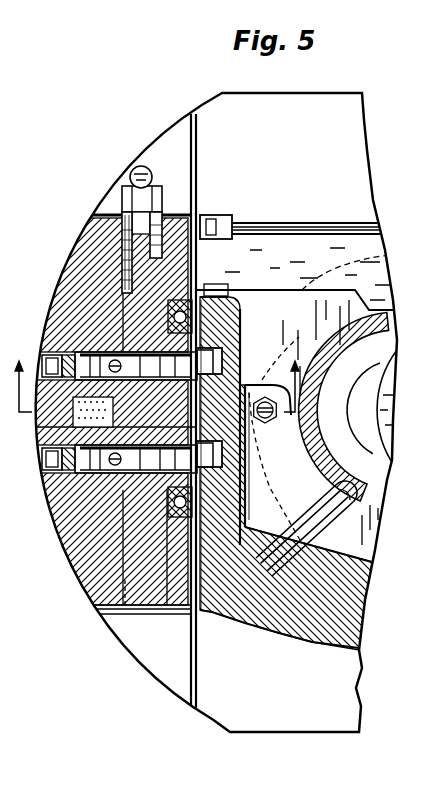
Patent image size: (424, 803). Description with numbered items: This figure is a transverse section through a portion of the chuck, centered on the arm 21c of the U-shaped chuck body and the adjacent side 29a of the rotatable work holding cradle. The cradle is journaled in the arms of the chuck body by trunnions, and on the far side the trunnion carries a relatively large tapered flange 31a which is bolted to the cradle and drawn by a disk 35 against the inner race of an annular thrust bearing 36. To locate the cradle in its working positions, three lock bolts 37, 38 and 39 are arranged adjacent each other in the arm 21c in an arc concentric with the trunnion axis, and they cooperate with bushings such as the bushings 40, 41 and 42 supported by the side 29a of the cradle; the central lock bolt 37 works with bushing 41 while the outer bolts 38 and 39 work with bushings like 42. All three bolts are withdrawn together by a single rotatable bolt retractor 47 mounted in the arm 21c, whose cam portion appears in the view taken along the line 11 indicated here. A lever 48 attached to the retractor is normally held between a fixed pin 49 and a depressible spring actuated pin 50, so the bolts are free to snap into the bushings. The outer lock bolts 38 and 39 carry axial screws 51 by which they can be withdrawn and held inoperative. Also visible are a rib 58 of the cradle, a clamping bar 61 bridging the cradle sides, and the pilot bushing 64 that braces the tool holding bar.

The lever 48 is at (136, 168).
The spring actuated pin 50 is at (122, 195).
The fixed pin 49 is at (163, 193).
The clamping bar 61 is at (290, 246).
The lock bolt 38 is at (100, 350).
The annular thrust bearing 36 is at (20, 300).
The flange 31a is at (2, 325).
The screw 51 is at (42, 352).
The section line 11 is at (163, 377).
The disk 35 is at (42, 470).
The lock bolt 39 is at (100, 500).
The bolt retractor 47 is at (63, 553).
The arm of the chuck body 21c is at (80, 584).
The bushing 40 is at (232, 332).
The lock bolt 37 is at (216, 412).
The bushing 41 is at (250, 384).
The bushing 42 is at (240, 465).
The side of the cradle 29a is at (245, 503).
The rib 58 is at (289, 458).
The pilot bushing 64 is at (362, 395).